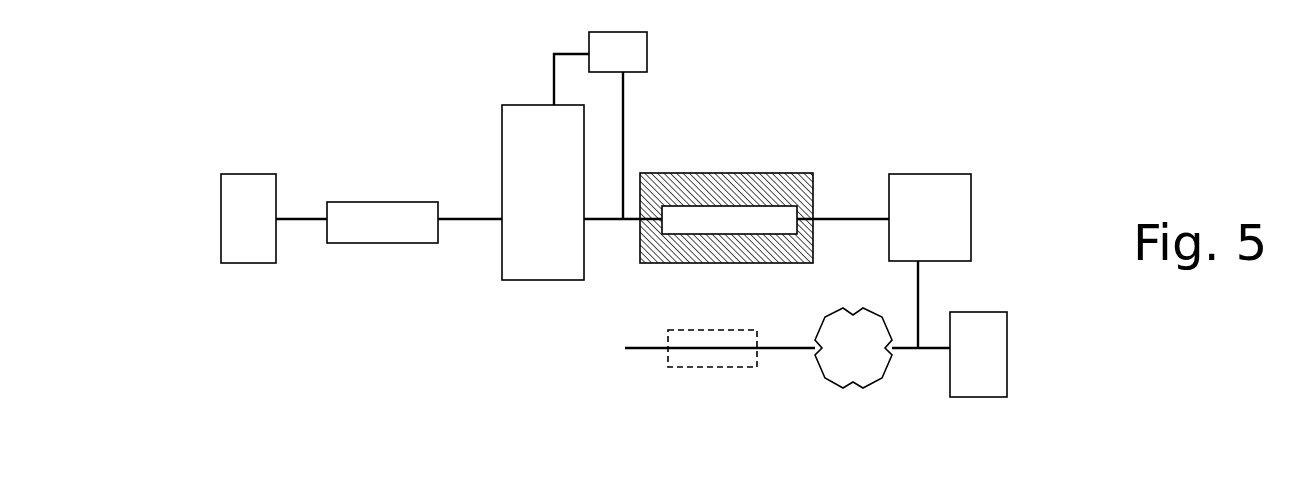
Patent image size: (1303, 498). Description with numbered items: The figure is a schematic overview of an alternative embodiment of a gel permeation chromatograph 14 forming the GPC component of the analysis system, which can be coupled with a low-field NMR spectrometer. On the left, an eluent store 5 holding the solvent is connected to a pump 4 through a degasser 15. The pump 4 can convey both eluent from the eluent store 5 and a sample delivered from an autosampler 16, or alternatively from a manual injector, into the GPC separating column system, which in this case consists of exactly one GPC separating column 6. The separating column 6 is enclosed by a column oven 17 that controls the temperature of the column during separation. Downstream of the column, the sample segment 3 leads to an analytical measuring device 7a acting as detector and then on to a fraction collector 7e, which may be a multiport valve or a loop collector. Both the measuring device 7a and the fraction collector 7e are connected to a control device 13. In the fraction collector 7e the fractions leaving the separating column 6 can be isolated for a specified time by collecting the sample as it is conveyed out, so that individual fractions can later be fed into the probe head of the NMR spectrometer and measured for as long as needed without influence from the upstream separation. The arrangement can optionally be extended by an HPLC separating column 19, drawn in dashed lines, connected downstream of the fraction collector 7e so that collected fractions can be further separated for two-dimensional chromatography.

The eluent store 5 is at (248, 218).
The degasser 15 is at (382, 222).
The pump 4 is at (543, 192).
The autosampler 16 is at (618, 52).
The column oven 17 is at (783, 193).
The GPC separating column 6 is at (729, 220).
The analytical measuring device 7a is at (930, 217).
The gel permeation chromatograph 14 is at (911, 84).
The sample segment 3 is at (928, 298).
The control device 13 is at (978, 354).
The fraction collector 7e is at (853, 348).
The HPLC separating column 19 is at (690, 359).